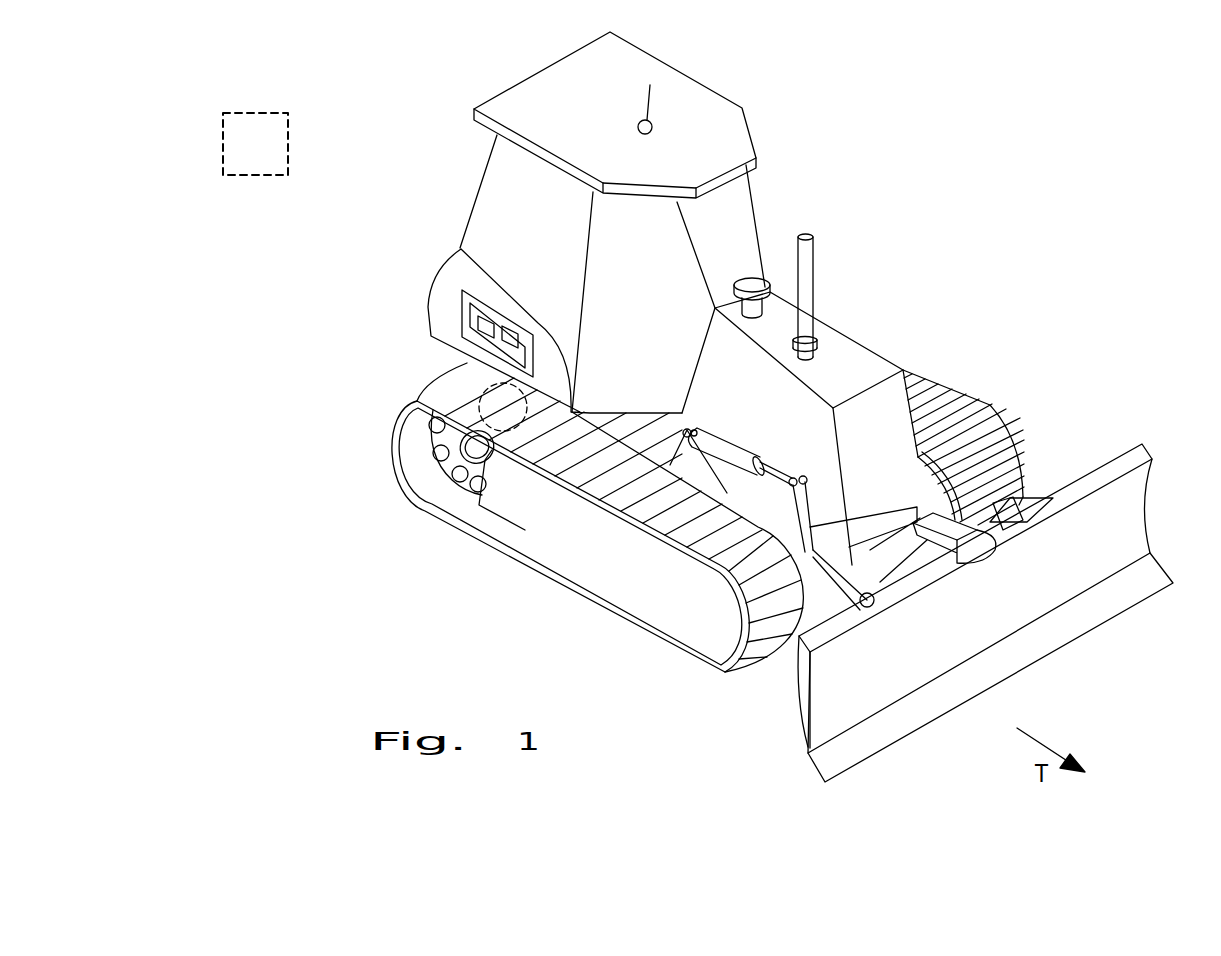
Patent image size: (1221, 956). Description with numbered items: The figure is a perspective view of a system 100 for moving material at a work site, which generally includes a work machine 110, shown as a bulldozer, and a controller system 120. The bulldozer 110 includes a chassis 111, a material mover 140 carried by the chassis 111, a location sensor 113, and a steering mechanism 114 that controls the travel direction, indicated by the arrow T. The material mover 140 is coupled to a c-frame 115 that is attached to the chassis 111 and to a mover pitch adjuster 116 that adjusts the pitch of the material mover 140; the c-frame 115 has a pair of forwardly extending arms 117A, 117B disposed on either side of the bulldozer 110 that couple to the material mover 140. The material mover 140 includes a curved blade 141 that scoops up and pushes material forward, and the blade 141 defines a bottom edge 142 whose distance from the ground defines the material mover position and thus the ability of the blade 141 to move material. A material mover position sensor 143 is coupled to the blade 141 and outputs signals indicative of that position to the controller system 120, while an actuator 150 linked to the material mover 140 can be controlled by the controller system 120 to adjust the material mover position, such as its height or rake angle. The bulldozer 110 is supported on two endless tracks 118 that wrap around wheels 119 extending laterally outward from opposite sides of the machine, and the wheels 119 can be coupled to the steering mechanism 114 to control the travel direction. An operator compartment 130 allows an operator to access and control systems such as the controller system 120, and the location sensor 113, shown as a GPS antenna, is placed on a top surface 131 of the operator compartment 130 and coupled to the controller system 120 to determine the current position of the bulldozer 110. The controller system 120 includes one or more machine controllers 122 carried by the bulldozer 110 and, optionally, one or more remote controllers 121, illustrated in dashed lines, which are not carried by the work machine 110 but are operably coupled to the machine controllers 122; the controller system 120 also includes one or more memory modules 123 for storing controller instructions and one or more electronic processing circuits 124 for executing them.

The system 100 is at (1045, 212).
The work machine 110 is at (845, 276).
The chassis 111 is at (603, 582).
The location sensor 113 is at (652, 127).
The steering mechanism 114 is at (480, 407).
The c-frame 115 is at (827, 604).
The mover pitch adjuster 116 is at (967, 517).
The forwardly extending arm 117A is at (1048, 500).
The forwardly extending arm 117B is at (852, 580).
The endless track 118 is at (627, 623).
The wheel 119 is at (477, 460).
The controller system 120 is at (447, 324).
The remote controller 121 is at (242, 112).
The machine controller 122 is at (467, 307).
The memory module 123 is at (487, 318).
The electronic processing circuit 124 is at (510, 330).
The operator compartment 130 is at (775, 208).
The top surface 131 is at (591, 137).
The material mover 140 is at (1150, 425).
The blade 141 is at (1087, 572).
The bottom edge 142 is at (1058, 647).
The material mover position sensor 143 is at (1030, 500).
The actuator 150 is at (858, 525).